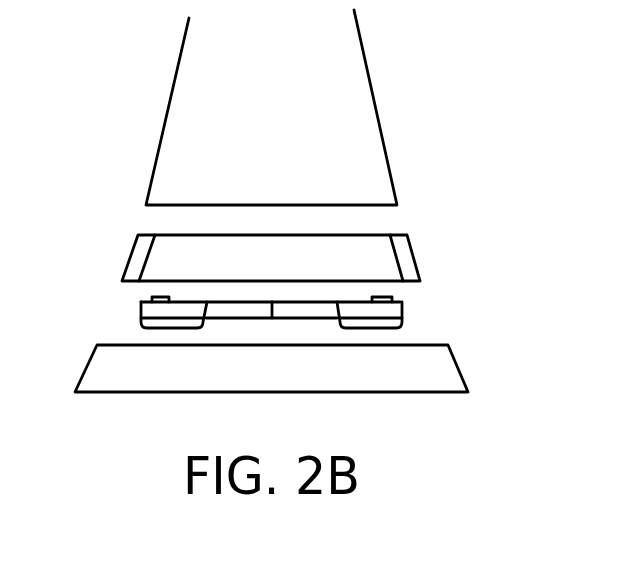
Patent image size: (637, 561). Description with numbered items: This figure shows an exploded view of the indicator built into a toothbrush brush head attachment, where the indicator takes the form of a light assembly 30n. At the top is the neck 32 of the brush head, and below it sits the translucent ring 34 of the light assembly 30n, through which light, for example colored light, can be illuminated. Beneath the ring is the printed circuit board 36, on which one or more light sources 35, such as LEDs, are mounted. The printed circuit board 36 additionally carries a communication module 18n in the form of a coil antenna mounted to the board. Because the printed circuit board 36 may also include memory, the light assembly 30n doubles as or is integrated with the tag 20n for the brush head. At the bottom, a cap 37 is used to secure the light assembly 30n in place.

The neck 32 is at (363, 98).
The light assembly 30n is at (497, 203).
The translucent ring 34 is at (140, 258).
The light source 35 is at (385, 299).
The printed circuit board 36 is at (141, 312).
The tag 20n is at (420, 318).
The communication module 18n is at (160, 328).
The cap 37 is at (428, 382).